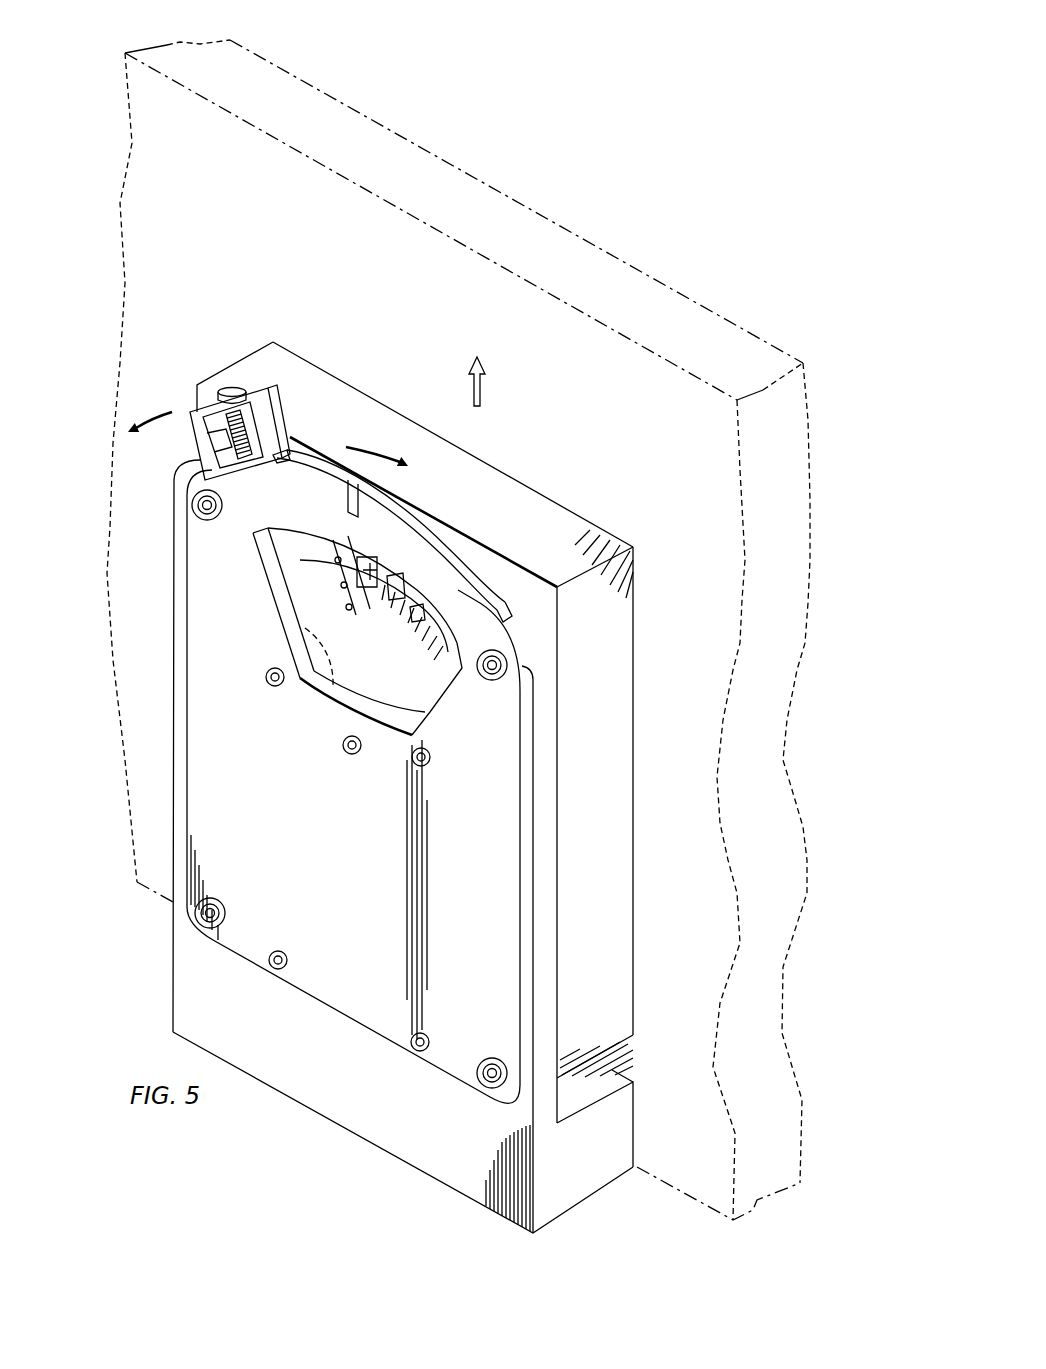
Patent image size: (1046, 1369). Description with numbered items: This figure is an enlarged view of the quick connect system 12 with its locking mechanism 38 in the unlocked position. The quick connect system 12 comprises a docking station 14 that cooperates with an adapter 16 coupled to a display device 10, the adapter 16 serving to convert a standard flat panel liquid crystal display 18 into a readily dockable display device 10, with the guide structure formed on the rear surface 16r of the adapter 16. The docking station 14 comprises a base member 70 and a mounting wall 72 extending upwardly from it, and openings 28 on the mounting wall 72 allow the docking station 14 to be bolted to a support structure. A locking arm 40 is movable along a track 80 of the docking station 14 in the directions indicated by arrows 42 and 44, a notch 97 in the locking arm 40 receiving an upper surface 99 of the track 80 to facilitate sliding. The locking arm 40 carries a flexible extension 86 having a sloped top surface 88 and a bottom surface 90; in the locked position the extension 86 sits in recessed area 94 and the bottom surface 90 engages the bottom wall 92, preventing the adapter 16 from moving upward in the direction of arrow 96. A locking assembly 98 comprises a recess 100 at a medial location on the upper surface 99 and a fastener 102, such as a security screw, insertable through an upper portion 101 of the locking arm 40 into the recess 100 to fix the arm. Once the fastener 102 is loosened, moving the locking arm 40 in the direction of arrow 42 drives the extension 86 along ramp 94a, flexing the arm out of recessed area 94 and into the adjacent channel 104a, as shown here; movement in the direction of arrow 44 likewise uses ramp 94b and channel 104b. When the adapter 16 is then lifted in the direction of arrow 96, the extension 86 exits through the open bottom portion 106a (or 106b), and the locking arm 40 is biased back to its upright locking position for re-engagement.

The display device 10 is at (458, 630).
The quick connect system 12 is at (410, 770).
The docking station 14 is at (376, 1152).
The adapter 16 is at (389, 841).
The rear surface of adapter 16r is at (553, 596).
The flat panel liquid crystal display 18 is at (605, 266).
The openings 28 is at (206, 520).
The locking mechanism 38 is at (233, 394).
The locking arm 40 is at (272, 400).
The direction arrow 42 is at (170, 410).
The direction arrow 44 is at (346, 447).
The base member 70 is at (628, 1130).
The mounting wall 72 is at (560, 828).
The track 80 is at (389, 536).
The extension 86 is at (357, 608).
The sloped top surface 88 is at (324, 570).
The bottom surface 90 is at (318, 604).
The bottom wall 92 is at (394, 587).
The recessed area 94 is at (415, 572).
The ramp 94a is at (372, 562).
The ramp 94b is at (425, 614).
The arrow 96 is at (482, 398).
The notch 97 is at (284, 466).
The locking assembly 98 is at (222, 437).
The upper surface of track 99 is at (437, 540).
The recess 100 is at (372, 502).
The upper portion of locking arm 101 is at (262, 376).
The fastener 102 is at (234, 388).
The channel 104a is at (346, 530).
The channel 104b is at (434, 652).
The open bottom portion 106a is at (322, 667).
The open bottom portion 106b is at (396, 709).